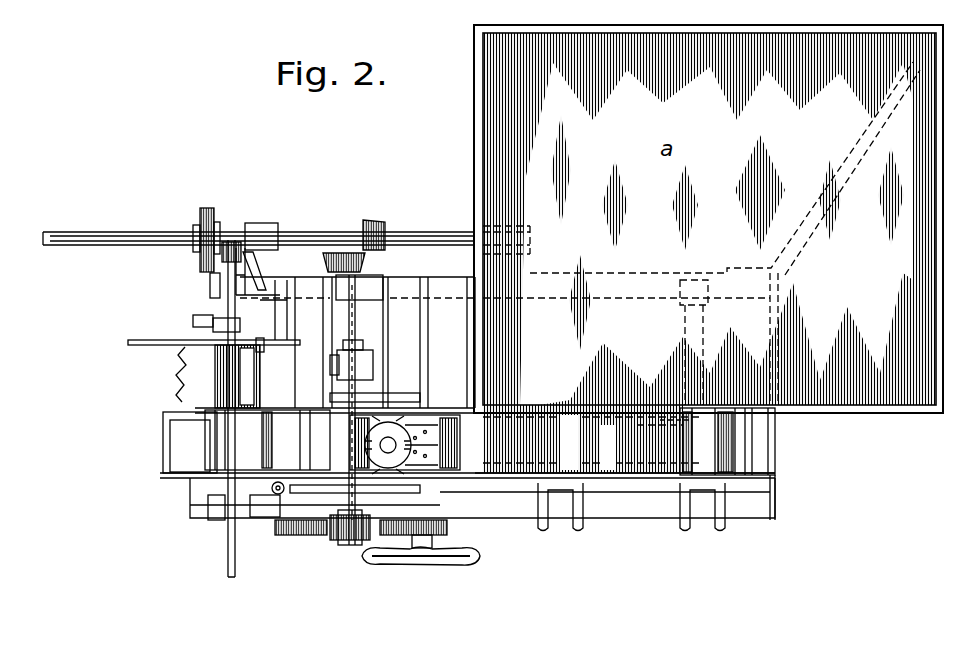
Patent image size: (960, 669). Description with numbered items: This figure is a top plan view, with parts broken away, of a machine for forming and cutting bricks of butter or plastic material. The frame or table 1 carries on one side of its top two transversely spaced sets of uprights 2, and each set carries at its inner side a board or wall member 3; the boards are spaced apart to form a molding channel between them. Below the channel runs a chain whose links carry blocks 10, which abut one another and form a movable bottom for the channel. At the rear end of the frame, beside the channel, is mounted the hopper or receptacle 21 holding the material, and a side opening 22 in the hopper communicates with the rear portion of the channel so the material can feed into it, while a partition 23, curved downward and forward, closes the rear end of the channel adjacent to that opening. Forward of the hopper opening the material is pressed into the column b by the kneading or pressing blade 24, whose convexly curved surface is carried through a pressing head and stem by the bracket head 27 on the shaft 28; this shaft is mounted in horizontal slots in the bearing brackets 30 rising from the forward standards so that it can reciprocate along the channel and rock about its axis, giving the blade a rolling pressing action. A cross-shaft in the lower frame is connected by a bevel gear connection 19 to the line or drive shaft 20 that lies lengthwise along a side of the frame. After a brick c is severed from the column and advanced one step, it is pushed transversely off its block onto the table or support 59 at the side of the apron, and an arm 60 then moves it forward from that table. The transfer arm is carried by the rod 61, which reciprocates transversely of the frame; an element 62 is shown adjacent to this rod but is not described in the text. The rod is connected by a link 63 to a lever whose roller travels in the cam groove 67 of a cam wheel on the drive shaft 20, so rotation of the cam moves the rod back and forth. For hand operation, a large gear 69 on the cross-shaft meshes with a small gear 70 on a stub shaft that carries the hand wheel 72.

The frame or table 1 is at (640, 513).
The uprights 2 is at (566, 488).
The board or wall member 3 is at (470, 410).
The block 10 is at (762, 441).
The bevel gear connection 19 is at (371, 259).
The line or drive shaft 20 is at (437, 232).
The hopper or receptacle 21 is at (474, 155).
The side opening 22 is at (505, 410).
The partition 23 is at (678, 430).
The kneading or pressing blade 24 is at (470, 431).
The bracket head 27 is at (402, 435).
The shaft 28 is at (362, 385).
The bearing brackets 30 is at (402, 392).
The table or support 59 is at (163, 374).
The arm 60 is at (261, 345).
The rod 61 is at (228, 546).
The cam block 62 is at (248, 247).
The link 63 is at (210, 289).
The cam groove 67 is at (203, 216).
The large gear 69 is at (303, 535).
The small gear 70 is at (448, 531).
The hand wheel 72 is at (413, 566).
The column b is at (267, 440).
The brick c is at (218, 361).